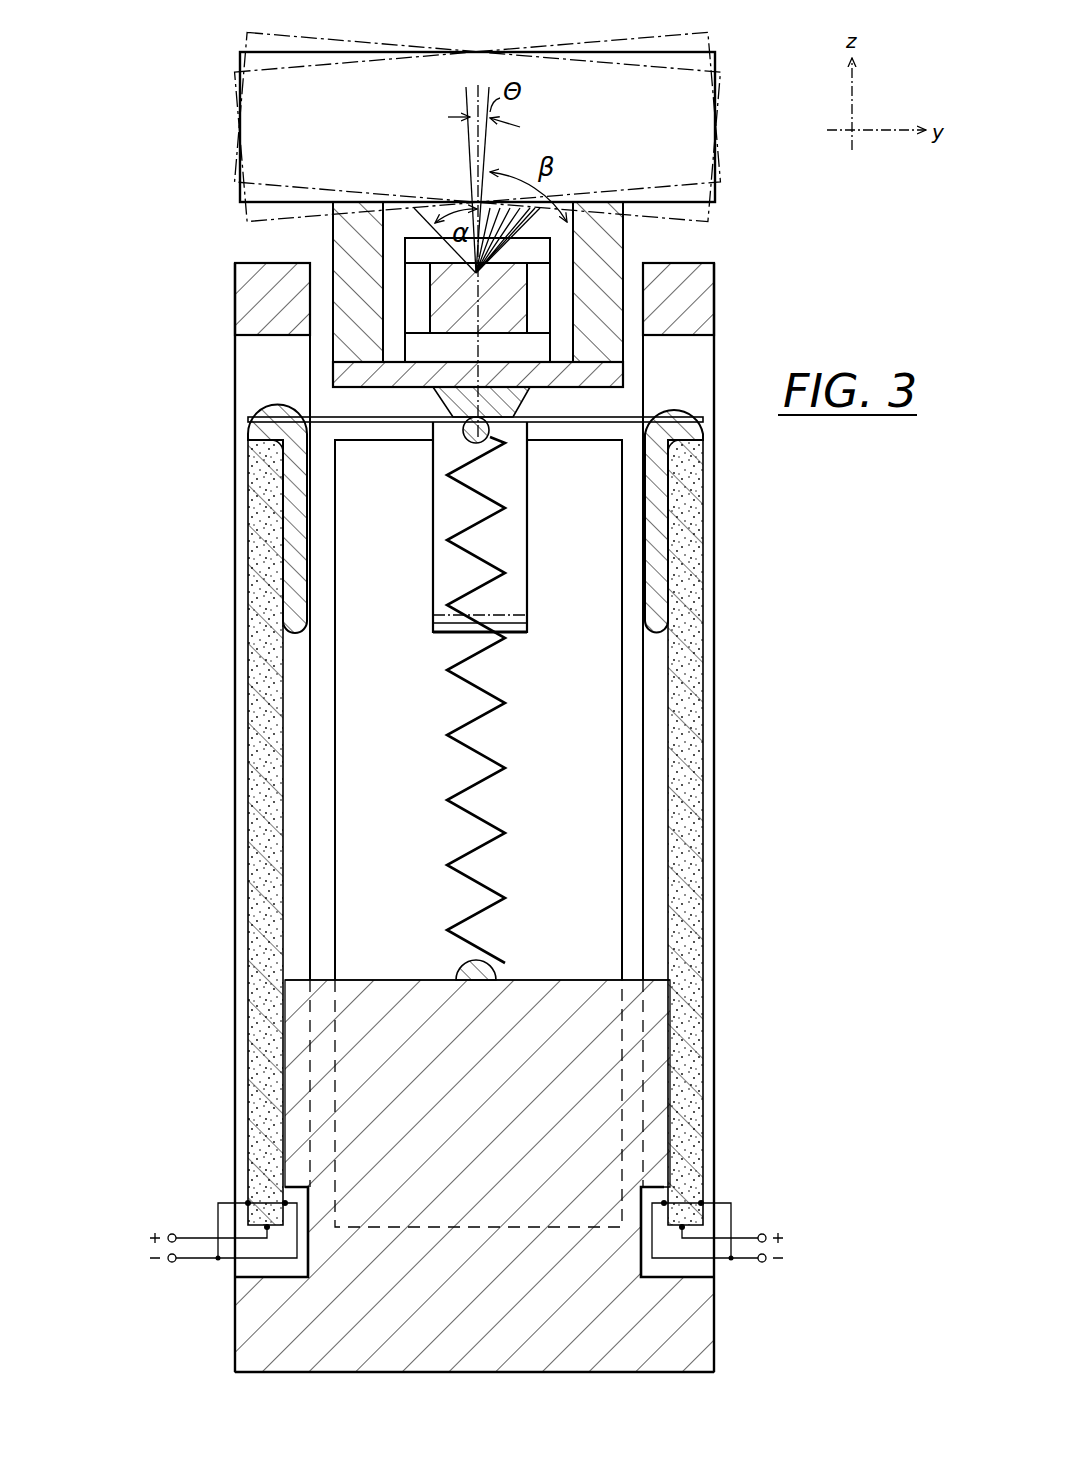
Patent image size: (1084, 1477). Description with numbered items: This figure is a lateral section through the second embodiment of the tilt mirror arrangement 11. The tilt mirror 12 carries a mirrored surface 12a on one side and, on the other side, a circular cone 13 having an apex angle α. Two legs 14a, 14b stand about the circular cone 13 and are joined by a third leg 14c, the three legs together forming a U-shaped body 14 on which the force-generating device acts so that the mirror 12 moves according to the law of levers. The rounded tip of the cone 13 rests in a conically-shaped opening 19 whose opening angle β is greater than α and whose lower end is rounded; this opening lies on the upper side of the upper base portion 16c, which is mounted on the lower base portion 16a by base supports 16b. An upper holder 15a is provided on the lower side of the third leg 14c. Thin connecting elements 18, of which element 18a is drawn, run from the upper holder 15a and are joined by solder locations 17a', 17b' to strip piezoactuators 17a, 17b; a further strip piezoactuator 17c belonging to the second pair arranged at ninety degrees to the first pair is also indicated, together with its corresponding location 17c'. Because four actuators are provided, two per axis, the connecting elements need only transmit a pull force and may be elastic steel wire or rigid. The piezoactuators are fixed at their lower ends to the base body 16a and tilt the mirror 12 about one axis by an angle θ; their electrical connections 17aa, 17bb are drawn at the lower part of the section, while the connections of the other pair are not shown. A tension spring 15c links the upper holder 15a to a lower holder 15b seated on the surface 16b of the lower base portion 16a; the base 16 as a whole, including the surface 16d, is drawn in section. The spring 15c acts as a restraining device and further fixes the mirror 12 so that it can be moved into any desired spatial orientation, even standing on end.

The light deflector 11 is at (206, 108).
The tilt mirror 12 is at (716, 152).
The mirrored surface 12a is at (348, 52).
The circular cone 13 is at (333, 237).
The U-shaped body 14 is at (332, 298).
The leg 14a is at (338, 343).
The leg 14b is at (607, 350).
The third leg 14c is at (335, 378).
The upper holder 15a is at (500, 437).
The lower holder 15b is at (455, 968).
The tension spring 15c is at (505, 835).
The base body 16 is at (650, 1020).
The lower base portion 16a is at (706, 1342).
The base support 16b is at (714, 655).
The upper base portion 16c is at (698, 300).
The base top surface 16d is at (553, 978).
The strip piezoactuator 17a is at (715, 521).
The solder location 17a' is at (730, 825).
The electrical connection 17aa is at (787, 1226).
The strip piezoactuator 17b is at (236, 519).
The solder location 17b' is at (226, 832).
The electrical connection 17bb is at (146, 1226).
The further strip piezoactuator 17c is at (690, 750).
The spring housing 17c' is at (515, 528).
The movable frame 18 is at (368, 422).
The connecting element 18a is at (600, 422).
The conically-shaped opening 19 is at (500, 275).